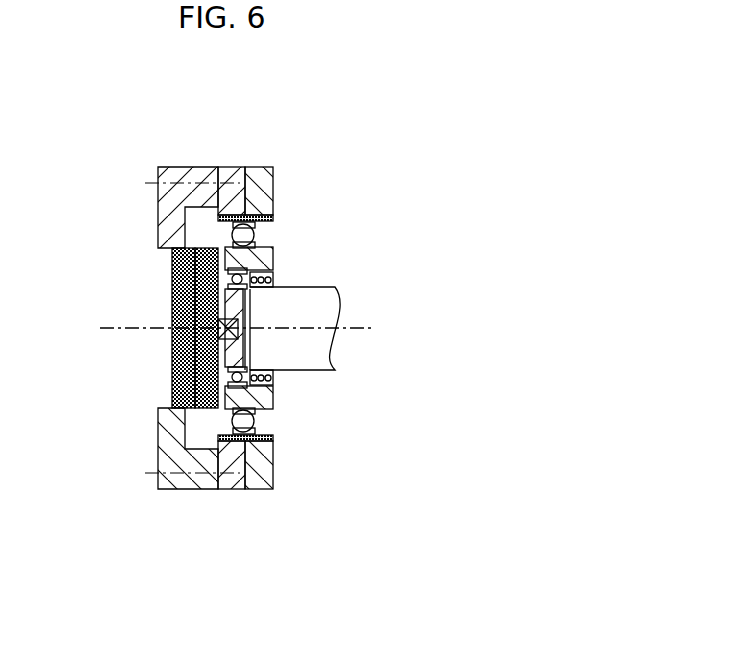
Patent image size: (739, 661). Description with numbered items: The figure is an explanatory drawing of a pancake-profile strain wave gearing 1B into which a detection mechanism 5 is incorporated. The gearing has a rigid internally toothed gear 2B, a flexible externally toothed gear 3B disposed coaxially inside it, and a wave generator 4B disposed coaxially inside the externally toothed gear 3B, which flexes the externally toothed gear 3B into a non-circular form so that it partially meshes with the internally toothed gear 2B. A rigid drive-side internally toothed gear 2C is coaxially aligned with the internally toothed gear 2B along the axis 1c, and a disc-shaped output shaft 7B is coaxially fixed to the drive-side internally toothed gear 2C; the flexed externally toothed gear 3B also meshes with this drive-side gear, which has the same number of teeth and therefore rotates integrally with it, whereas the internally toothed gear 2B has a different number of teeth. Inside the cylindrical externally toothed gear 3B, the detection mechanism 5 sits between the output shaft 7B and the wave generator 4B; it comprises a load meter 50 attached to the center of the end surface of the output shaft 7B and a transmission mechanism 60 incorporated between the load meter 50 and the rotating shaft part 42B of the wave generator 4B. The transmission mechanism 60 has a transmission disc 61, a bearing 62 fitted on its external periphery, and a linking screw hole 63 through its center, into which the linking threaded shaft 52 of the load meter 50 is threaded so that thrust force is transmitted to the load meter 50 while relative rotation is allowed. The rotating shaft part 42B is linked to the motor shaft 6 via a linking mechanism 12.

The pancake-profile strain wave gearing 1B is at (322, 142).
The axis 1c is at (148, 322).
The rigid internally toothed gear 2B is at (263, 190).
The rigid drive-side internally toothed gear 2C is at (230, 193).
The flexible externally toothed gear 3B is at (280, 220).
The wave generator 4B is at (295, 260).
The rotating shaft part 42B is at (258, 268).
The detection mechanism 5 is at (185, 425).
The motor shaft 6 is at (327, 373).
The disc-shaped output shaft 7B is at (152, 218).
The linking mechanism 12 is at (278, 381).
The load meter 50 is at (186, 418).
The linking threaded shaft 52 is at (225, 337).
The transmission mechanism 60 is at (219, 406).
The transmission disc 61 is at (248, 307).
The bearing 62 is at (273, 277).
The linking screw hole 63 is at (248, 345).